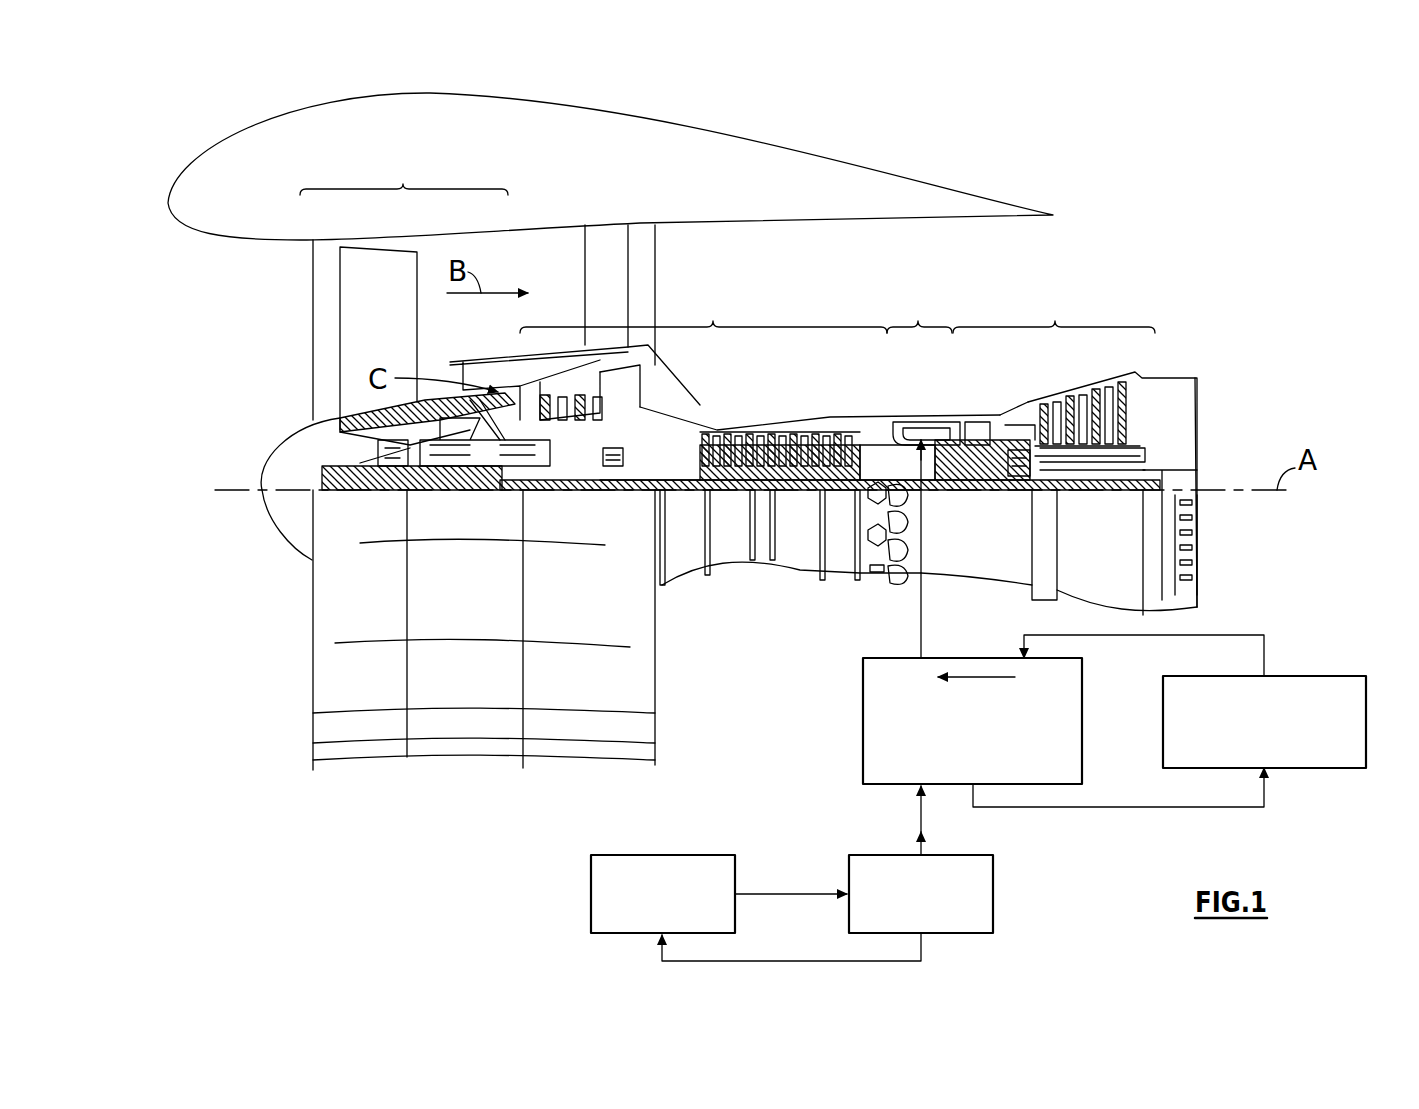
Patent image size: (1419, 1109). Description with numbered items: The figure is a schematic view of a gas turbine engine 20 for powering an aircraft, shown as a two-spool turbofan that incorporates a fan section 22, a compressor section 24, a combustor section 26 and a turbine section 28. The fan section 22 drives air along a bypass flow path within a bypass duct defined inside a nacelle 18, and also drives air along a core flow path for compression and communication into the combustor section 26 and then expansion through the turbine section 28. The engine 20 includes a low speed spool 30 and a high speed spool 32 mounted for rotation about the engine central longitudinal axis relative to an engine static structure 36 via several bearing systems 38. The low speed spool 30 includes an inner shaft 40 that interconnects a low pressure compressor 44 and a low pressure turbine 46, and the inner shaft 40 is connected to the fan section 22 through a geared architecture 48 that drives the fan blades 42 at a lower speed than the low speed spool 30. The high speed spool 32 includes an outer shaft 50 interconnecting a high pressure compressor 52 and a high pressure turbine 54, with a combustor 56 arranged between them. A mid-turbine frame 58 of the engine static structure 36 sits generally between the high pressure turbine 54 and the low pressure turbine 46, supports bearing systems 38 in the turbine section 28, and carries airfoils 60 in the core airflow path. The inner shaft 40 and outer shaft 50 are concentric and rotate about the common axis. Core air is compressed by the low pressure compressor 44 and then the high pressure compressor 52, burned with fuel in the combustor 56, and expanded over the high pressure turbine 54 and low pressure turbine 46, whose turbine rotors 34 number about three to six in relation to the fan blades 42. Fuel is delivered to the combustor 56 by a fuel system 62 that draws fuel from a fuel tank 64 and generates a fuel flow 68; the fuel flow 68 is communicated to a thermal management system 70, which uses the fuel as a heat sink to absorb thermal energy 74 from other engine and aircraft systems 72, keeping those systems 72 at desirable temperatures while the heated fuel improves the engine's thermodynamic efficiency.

The nacelle 18 is at (603, 142).
The gas turbine engine 20 is at (1107, 140).
The fan section 22 is at (404, 173).
The compressor section 24 is at (760, 377).
The combustor section 26 is at (919, 311).
The turbine section 28 is at (1075, 448).
The low speed spool 30 is at (803, 497).
The high speed spool 32 is at (840, 432).
The turbine rotors 34 is at (1150, 470).
The engine static structure 36 is at (840, 578).
The bearing systems 38 is at (390, 490).
The inner shaft 40 is at (665, 490).
The fan blades 42 is at (394, 345).
The low pressure compressor 44 is at (593, 398).
The low pressure turbine 46 is at (1100, 392).
The geared architecture 48 is at (490, 490).
The outer shaft 50 is at (935, 490).
The high pressure compressor 52 is at (775, 432).
The high pressure turbine 54 is at (975, 425).
The combustor 56 is at (920, 425).
The mid-turbine frame 58 is at (1015, 405).
The airfoils 60 is at (1045, 490).
The fuel system 62 is at (993, 886).
The fuel tank 64 is at (591, 886).
The fuel flow 68 is at (921, 815).
The thermal management system 70 is at (952, 786).
The engine and aircraft systems 72 is at (1320, 676).
The thermal energy 74 is at (962, 677).